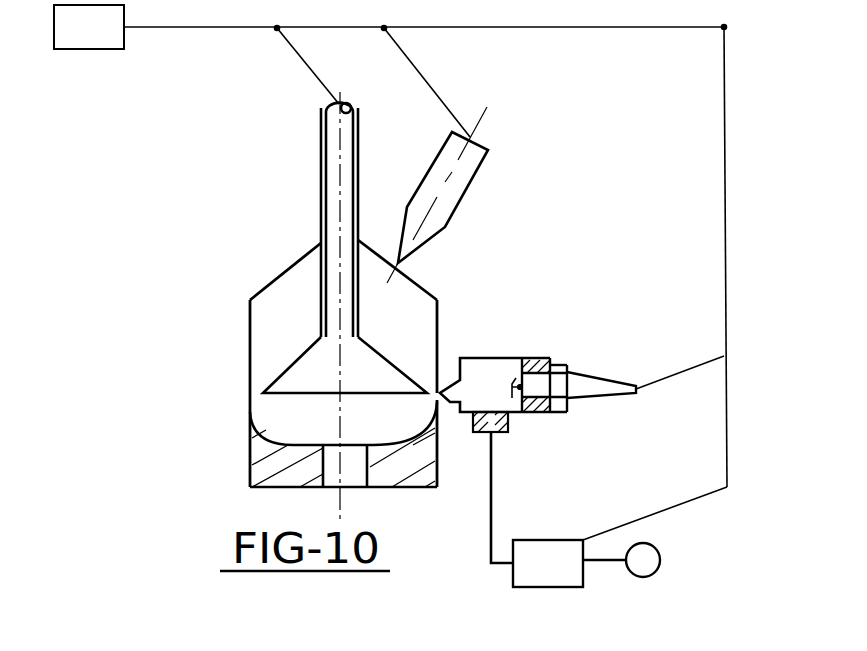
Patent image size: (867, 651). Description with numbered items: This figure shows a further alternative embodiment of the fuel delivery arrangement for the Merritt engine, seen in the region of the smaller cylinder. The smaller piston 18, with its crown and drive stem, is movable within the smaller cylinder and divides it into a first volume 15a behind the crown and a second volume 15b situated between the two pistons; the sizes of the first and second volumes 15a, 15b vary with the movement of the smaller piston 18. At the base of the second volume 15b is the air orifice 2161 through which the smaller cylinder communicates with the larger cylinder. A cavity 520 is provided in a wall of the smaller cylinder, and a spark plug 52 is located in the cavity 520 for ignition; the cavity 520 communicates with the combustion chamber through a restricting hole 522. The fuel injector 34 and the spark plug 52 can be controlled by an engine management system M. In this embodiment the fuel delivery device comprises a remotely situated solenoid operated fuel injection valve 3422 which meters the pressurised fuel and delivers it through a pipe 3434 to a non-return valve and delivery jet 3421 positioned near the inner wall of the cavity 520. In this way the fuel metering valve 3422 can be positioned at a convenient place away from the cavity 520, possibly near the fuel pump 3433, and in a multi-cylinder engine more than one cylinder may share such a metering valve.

The engine management system M is at (70, 41).
The fuel injector 34 is at (472, 160).
The first volume 15a is at (298, 296).
The smaller piston 18 is at (298, 387).
The second volume 15b is at (283, 422).
The air orifice 2161 is at (335, 473).
The restricting hole 522 is at (455, 385).
The cavity 520 is at (487, 373).
The spark plug 52 is at (598, 384).
The non-return valve and delivery jet 3421 is at (505, 425).
The pipe 3434 is at (488, 553).
The solenoid operated fuel injection valve 3422 is at (541, 560).
The fuel pump 3433 is at (645, 567).